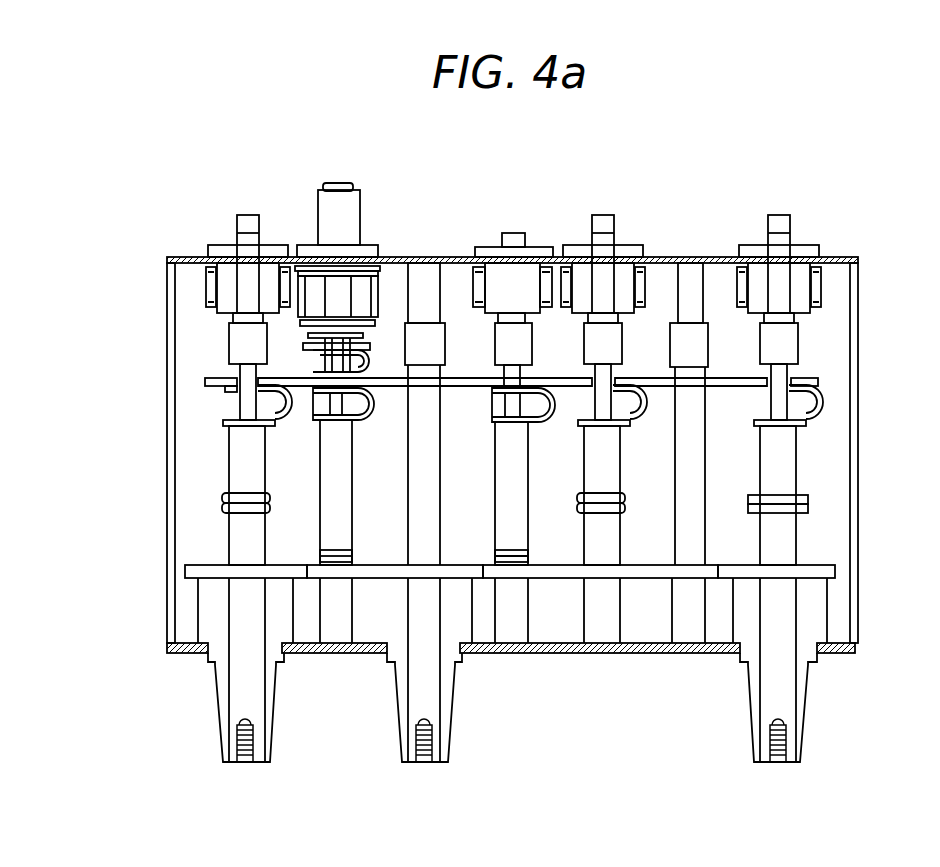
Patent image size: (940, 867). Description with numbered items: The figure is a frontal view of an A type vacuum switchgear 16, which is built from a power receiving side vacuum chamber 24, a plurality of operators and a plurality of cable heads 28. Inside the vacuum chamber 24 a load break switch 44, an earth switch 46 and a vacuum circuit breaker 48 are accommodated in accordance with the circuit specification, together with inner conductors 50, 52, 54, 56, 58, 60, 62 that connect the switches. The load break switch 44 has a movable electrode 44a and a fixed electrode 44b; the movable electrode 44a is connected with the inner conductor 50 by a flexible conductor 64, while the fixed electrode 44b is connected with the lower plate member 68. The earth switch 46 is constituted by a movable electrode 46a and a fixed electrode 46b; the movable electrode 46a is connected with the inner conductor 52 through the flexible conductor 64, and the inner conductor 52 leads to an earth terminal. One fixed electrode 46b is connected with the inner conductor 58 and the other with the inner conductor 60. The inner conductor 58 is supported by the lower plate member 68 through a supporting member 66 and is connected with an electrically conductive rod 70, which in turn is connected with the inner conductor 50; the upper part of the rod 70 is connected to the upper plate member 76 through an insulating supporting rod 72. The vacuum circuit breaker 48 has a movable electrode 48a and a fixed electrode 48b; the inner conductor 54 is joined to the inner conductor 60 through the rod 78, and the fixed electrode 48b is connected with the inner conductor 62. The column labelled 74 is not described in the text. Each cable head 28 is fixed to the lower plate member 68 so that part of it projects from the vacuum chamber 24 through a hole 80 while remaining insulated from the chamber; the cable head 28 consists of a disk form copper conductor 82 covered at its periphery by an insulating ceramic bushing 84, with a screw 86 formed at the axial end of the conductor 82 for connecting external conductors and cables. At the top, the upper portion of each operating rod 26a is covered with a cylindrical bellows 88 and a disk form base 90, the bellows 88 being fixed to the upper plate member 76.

The A type vacuum switchgear 16 is at (256, 115).
The power receiving side vacuum chamber 24 is at (162, 425).
The operating rod 26a is at (241, 243).
The cable head 28 is at (212, 730).
The load break switch 44 is at (203, 508).
The movable electrode 44a is at (237, 492).
The fixed electrode 44b is at (245, 508).
The earth switch 46 is at (360, 545).
The movable electrode 46a is at (318, 552).
The fixed electrode 46b is at (333, 562).
The vacuum circuit breaker 48 is at (815, 535).
The movable electrode 48a is at (777, 497).
The fixed electrode 48b is at (775, 510).
The inner conductor 50 is at (208, 378).
The inner conductor 52 is at (457, 380).
The inner conductor 54 is at (803, 380).
The inner conductor 56 is at (192, 575).
The inner conductor 58 is at (387, 567).
The inner conductor 60 is at (587, 640).
The inner conductor 62 is at (830, 572).
The flexible conductor 64 is at (275, 427).
The supporting member 66 is at (512, 630).
The lower plate member 68 is at (190, 652).
The electrically conductive rod 70 is at (432, 442).
The insulating supporting rod 72 is at (408, 337).
The upper column 74 is at (428, 273).
The upper plate member 76 is at (690, 263).
The rod 78 is at (692, 458).
The hole 80 is at (817, 657).
The disk form copper conductor 82 is at (240, 713).
The insulating ceramic bushing 84 is at (270, 720).
The screw 86 is at (243, 763).
The cylindrical bellows 88 is at (646, 283).
The disk form base 90 is at (276, 242).